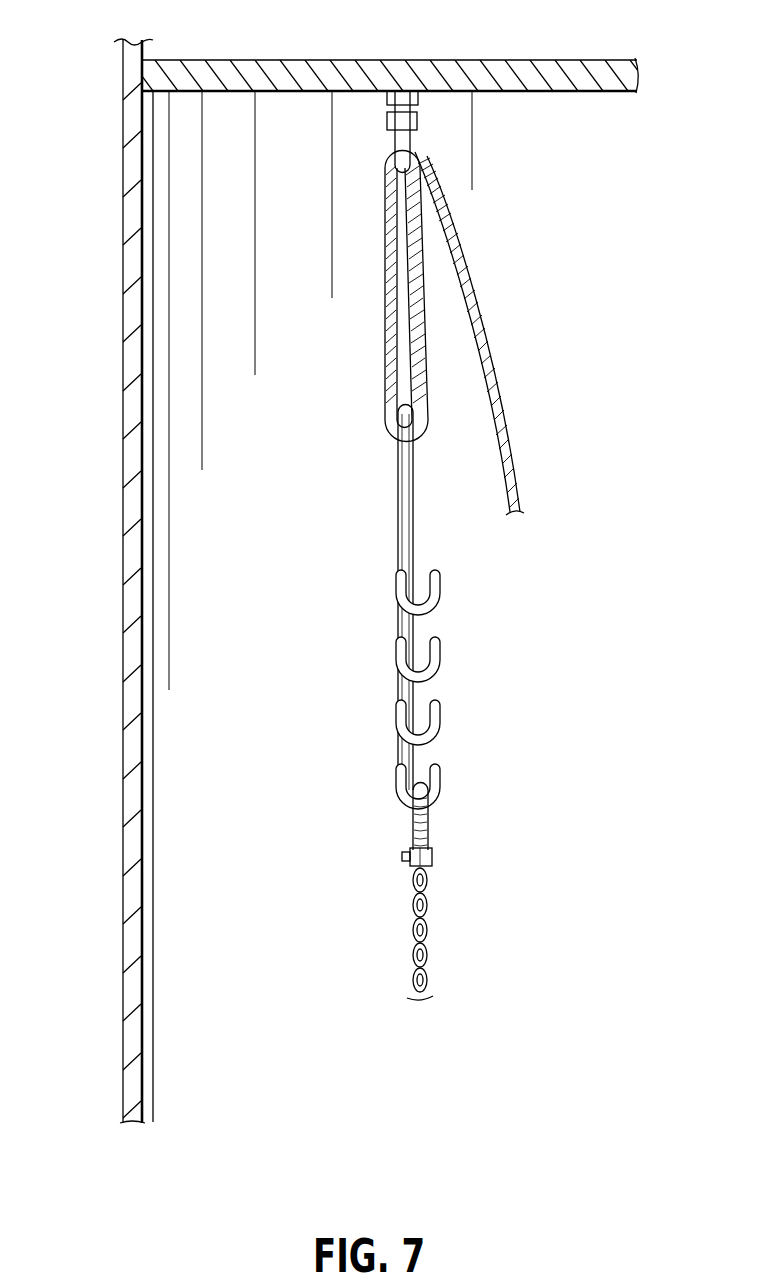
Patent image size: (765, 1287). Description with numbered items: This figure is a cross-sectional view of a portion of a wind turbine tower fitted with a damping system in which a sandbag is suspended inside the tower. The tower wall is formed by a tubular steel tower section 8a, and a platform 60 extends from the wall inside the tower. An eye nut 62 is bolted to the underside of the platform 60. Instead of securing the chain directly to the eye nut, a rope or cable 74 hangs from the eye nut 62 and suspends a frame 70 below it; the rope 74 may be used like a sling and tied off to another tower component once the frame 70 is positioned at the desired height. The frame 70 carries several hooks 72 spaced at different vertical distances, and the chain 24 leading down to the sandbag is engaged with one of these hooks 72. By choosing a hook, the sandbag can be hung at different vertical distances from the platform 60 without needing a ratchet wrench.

The tower section 8a is at (122, 170).
The platform 60 is at (486, 60).
The eye nut 62 is at (418, 118).
The rope or cable 74 is at (477, 278).
The frame 70 is at (398, 507).
The hooks 72 is at (441, 590).
The chain 24 is at (430, 907).